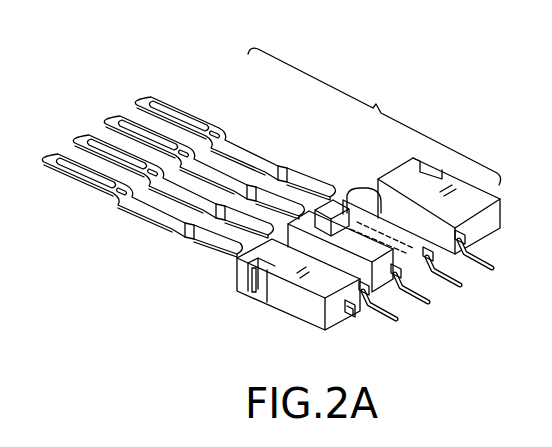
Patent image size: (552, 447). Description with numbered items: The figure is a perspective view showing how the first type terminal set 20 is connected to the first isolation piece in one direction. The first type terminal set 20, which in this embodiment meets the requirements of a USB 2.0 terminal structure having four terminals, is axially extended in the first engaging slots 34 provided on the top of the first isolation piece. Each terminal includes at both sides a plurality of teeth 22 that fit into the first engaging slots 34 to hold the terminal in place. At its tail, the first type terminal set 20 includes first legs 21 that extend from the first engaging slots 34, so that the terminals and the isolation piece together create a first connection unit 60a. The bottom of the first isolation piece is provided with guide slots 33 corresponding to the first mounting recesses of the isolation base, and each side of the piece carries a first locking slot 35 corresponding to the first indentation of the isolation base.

The first type terminal set 20 is at (259, 146).
The first legs 21 is at (490, 272).
The teeth 22 is at (431, 283).
The guide slots 33 is at (350, 318).
The first engaging slots 34 is at (378, 192).
The first locking slot 35 is at (246, 283).
The first connection unit 60a is at (374, 116).